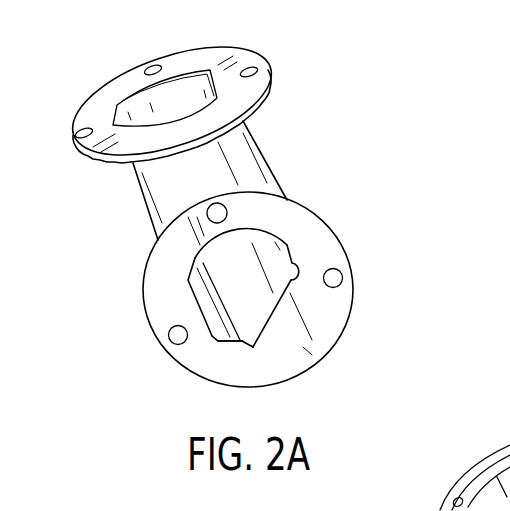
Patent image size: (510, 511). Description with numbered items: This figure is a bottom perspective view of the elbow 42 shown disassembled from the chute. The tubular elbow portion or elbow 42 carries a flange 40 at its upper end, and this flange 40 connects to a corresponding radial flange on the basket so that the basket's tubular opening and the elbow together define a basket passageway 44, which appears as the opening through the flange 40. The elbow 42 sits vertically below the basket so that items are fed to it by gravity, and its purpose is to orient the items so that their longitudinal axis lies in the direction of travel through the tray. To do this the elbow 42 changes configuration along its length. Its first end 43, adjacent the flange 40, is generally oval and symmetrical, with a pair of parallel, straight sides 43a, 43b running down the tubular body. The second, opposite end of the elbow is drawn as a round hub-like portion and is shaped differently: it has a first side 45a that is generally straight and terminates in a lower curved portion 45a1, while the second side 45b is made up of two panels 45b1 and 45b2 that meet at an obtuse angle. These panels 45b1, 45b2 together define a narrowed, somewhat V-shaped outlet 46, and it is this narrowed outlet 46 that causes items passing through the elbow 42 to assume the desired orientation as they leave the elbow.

The flange 40 is at (83, 153).
The tubular elbow portion 42 is at (313, 180).
The first end 43 is at (132, 173).
The straight side 43a is at (132, 183).
The straight side 43b is at (252, 128).
The basket passageway 44 is at (142, 108).
The first side 45a is at (193, 302).
The lower curved portion 45a1 is at (227, 340).
The second side 45b is at (283, 243).
The panel 45b1 is at (290, 258).
The panel 45b2 is at (270, 310).
The V-shaped outlet 46 is at (240, 325).